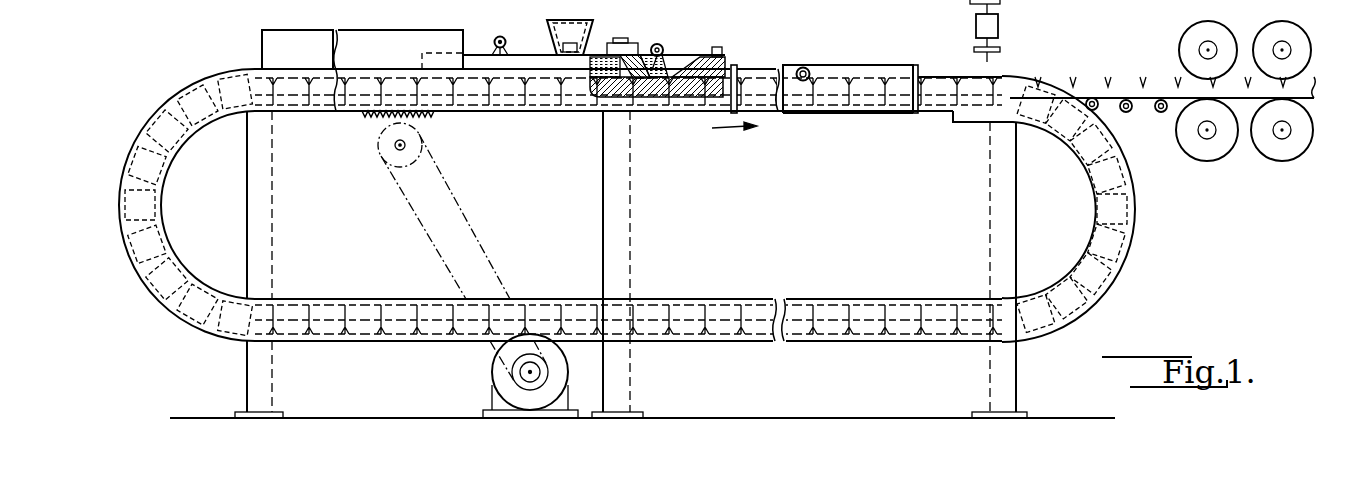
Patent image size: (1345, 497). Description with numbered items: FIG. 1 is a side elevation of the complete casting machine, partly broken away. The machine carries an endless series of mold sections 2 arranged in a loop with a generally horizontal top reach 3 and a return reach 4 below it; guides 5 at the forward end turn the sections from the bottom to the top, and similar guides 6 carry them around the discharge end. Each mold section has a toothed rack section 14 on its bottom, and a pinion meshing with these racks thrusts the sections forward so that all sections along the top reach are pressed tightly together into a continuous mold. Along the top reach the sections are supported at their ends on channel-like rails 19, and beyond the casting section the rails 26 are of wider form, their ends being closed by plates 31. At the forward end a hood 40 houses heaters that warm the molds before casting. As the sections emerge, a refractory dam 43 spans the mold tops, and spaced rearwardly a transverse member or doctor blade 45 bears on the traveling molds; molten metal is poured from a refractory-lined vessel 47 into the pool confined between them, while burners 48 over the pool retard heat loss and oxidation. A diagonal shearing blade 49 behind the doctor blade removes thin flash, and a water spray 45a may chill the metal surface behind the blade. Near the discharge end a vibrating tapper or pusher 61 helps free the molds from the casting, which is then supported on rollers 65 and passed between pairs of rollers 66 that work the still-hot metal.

The endless series of mold sections 2 is at (871, 114).
The top reach 3 is at (840, 75).
The return reach 4 is at (700, 299).
The guides 5 is at (170, 228).
The guides 6 is at (1088, 206).
The toothed rack section 14 is at (371, 117).
The channel-like rails 19 is at (529, 100).
The modified rails 26 is at (884, 65).
The end plates 31 is at (740, 66).
The hood 40 is at (366, 31).
The refractory dam 43 is at (440, 52).
The transverse member (doctor blade) 45 is at (633, 58).
The water spray 45a is at (662, 52).
The refractory-lined vessel 47 is at (590, 22).
The burners 48 is at (506, 38).
The diagonal shearing blade 49 is at (722, 48).
The vibrating tapper or pusher 61 is at (1000, 46).
The rollers 65 is at (1162, 113).
The pairs of rollers 66 is at (1265, 37).